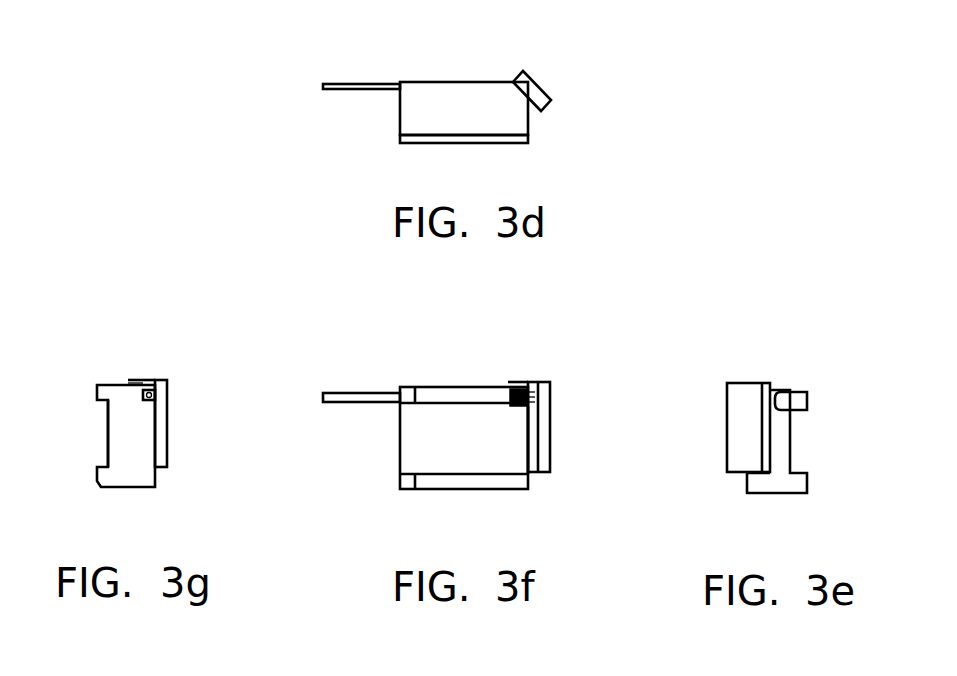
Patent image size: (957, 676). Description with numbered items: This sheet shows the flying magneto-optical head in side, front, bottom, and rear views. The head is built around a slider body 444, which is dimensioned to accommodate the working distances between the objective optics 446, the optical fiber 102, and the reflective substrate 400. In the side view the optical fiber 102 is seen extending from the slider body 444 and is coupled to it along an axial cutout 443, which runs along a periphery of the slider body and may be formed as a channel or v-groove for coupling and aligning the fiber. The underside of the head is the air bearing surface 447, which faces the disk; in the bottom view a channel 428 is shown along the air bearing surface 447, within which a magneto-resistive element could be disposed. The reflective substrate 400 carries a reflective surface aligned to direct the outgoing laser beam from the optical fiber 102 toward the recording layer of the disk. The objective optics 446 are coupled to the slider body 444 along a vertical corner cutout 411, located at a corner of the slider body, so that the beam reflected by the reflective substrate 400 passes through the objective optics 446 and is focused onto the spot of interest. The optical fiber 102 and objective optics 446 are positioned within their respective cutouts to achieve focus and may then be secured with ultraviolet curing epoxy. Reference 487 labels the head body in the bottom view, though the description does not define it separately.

In FIG. 3D, the optical fiber 102 is at (377, 90).
In FIG. 3G, the optical fiber 102 is at (152, 391).
In FIG. 3F, the optical fiber 102 is at (355, 395).
In FIG. 3D, the slider body 444 is at (442, 92).
In FIG. 3D, the air bearing surface 447 is at (508, 145).
In FIG. 3G, the air bearing surface 447 is at (97, 388).
In FIG. 3G, the axial cutout 443 is at (143, 398).
In FIG. 3F, the connector body 487 is at (418, 438).
In FIG. 3F, the channel 428 is at (508, 392).
In FIG. 3F, the vertical corner cutout 411 is at (510, 404).
In FIG. 3E, the reflective substrate 400 is at (743, 400).
In FIG. 3E, the objective optics 446 is at (795, 392).